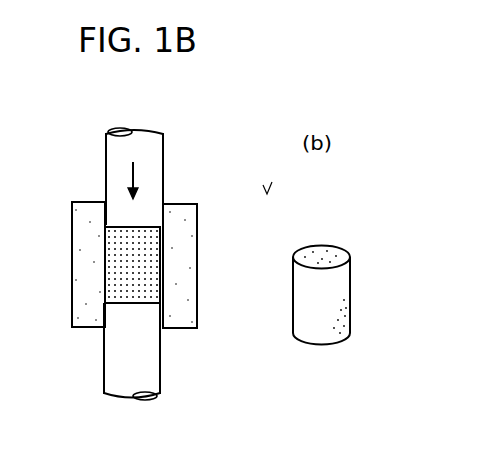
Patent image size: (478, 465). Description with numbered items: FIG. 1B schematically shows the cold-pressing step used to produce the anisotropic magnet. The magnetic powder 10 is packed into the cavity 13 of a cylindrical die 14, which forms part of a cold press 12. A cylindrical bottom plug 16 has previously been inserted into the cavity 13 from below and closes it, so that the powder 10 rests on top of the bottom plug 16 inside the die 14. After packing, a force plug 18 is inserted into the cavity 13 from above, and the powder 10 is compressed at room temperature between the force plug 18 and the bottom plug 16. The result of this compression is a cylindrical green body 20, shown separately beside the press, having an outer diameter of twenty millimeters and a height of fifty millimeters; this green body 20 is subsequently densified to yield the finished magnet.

The powder 10 is at (125, 293).
The cold press 12 is at (52, 257).
The cavity 13 is at (160, 238).
The cylindrical die 14 is at (181, 300).
The cylindrical bottom plug 16 is at (153, 371).
The force plug 18 is at (157, 160).
The cylindrical green body 20 is at (322, 224).